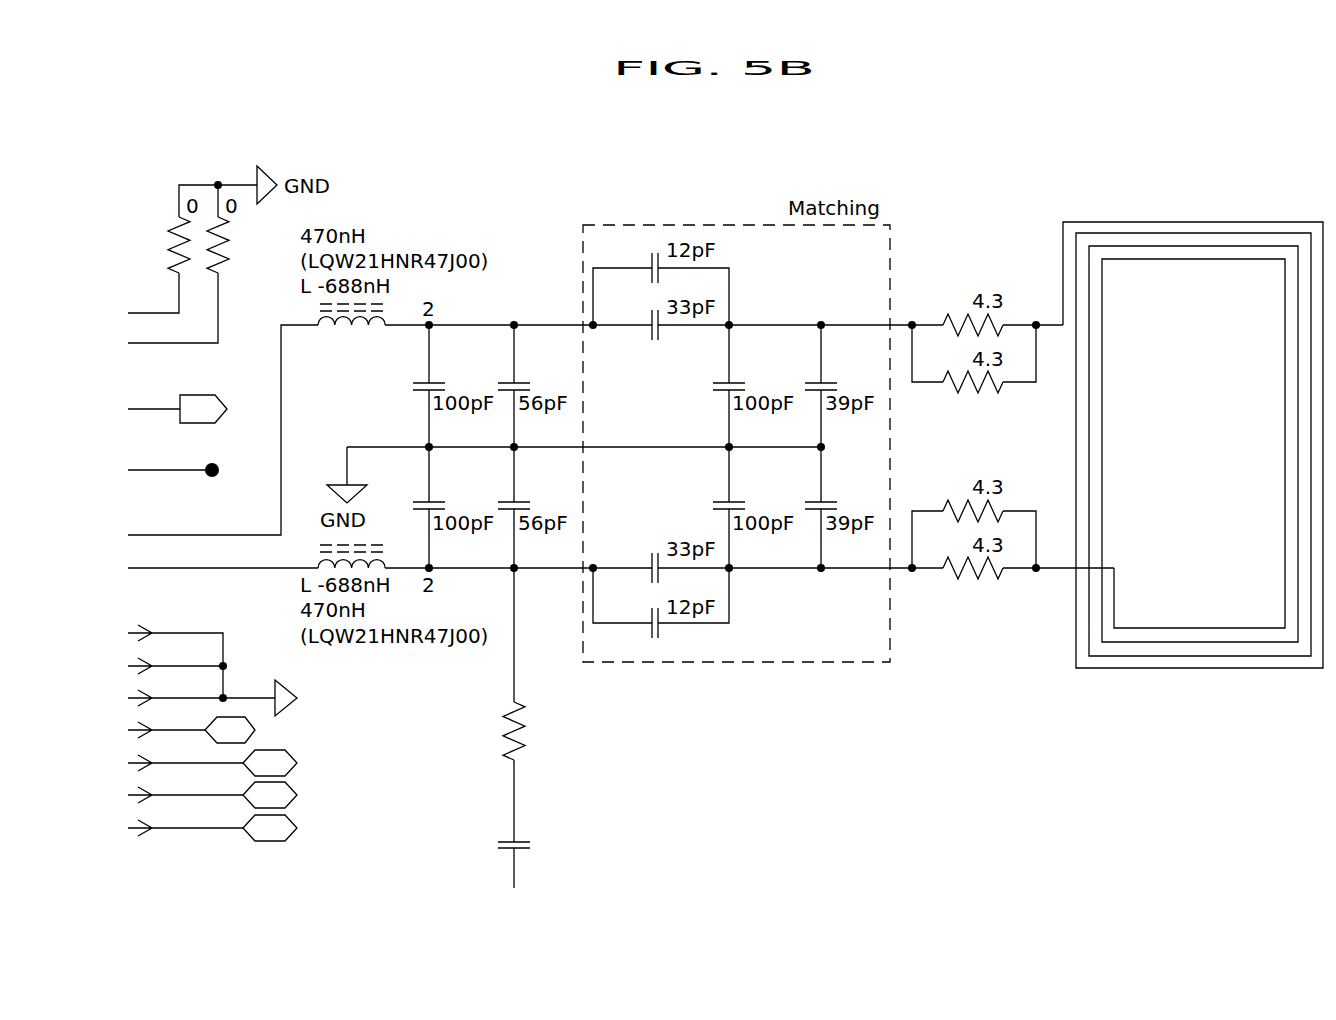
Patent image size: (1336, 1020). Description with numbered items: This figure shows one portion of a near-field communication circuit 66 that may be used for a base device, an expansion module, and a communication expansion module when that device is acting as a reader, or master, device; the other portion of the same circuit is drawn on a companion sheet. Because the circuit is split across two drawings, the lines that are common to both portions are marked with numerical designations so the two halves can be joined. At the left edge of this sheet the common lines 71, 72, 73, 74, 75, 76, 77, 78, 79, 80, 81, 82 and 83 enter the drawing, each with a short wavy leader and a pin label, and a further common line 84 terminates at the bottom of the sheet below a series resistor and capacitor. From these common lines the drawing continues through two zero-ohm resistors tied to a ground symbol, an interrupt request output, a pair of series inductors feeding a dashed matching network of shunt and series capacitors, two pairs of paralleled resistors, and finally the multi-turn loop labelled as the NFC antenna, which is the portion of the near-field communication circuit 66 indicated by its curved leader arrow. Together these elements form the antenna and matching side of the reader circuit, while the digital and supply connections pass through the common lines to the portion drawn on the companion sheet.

The near-field communication circuit 66 is at (1300, 155).
The common line 71 is at (125, 314).
The common line 72 is at (125, 344).
The common line 73 is at (125, 410).
The common line 74 is at (125, 471).
The common line 75 is at (125, 536).
The common line 76 is at (125, 569).
The common line 77 is at (125, 634).
The common line 78 is at (125, 667).
The common line 79 is at (125, 699).
The common line 80 is at (125, 731).
The common line 81 is at (125, 764).
The common line 82 is at (125, 796).
The common line 83 is at (125, 829).
The common line 84 is at (509, 881).